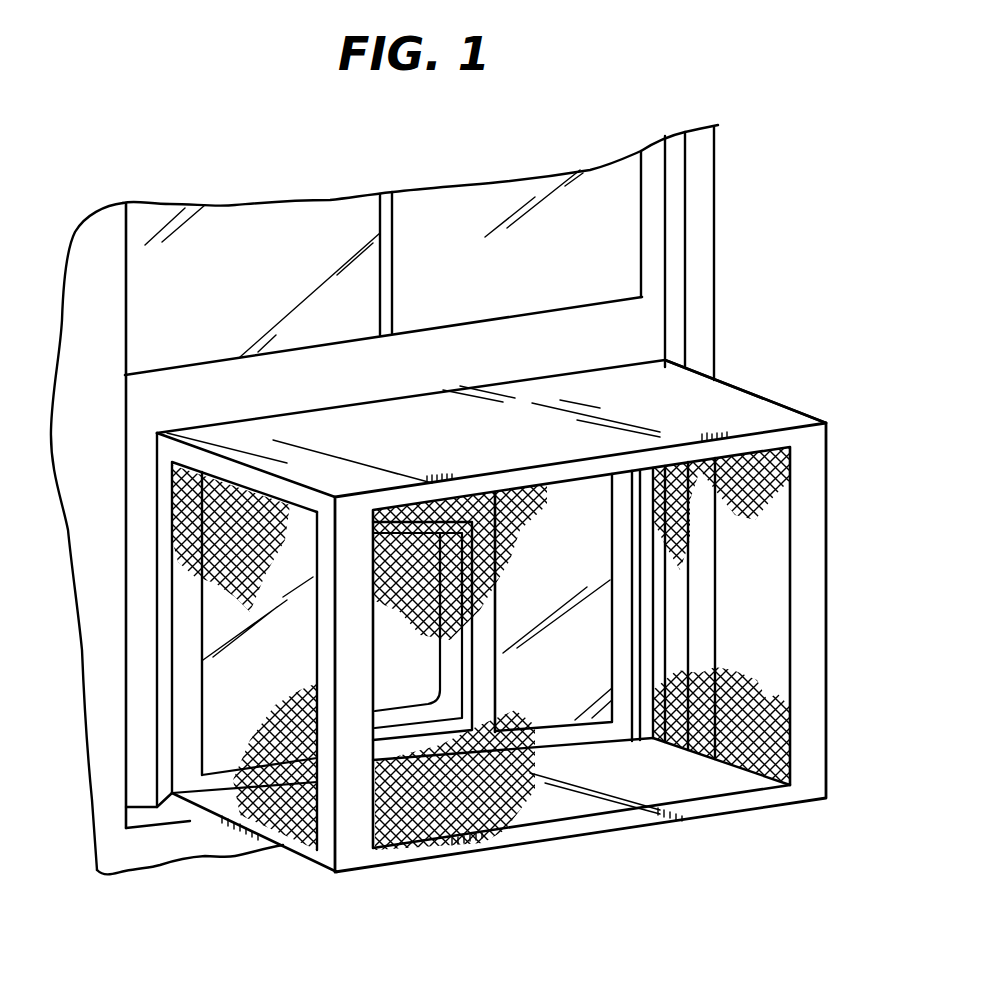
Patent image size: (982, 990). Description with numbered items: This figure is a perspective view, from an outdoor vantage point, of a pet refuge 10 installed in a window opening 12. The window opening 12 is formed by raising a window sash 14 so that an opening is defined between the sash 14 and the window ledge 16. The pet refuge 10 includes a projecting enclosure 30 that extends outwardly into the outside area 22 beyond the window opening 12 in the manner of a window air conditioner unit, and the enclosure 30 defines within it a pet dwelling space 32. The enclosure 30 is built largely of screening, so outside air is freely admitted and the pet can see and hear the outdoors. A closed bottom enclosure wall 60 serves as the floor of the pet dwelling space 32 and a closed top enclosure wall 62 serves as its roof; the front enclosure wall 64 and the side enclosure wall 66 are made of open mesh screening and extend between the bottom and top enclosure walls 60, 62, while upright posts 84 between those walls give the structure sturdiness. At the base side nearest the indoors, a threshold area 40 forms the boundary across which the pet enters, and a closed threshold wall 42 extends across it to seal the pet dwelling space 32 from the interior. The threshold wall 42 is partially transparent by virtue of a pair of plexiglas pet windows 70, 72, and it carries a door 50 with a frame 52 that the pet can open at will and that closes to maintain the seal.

The pet refuge 10 is at (791, 368).
The window opening 12 is at (132, 446).
The window sash 14 is at (213, 378).
The window ledge 16 is at (140, 822).
The outside area 22 is at (846, 395).
The projecting enclosure 30 is at (683, 393).
The pet dwelling space 32 is at (688, 775).
The threshold area 40 is at (458, 522).
The closed threshold wall 42 is at (227, 485).
The door 50 is at (415, 673).
The frame 52 is at (473, 640).
The bottom enclosure wall 60 is at (538, 847).
The top enclosure wall 62 is at (533, 430).
The front enclosure wall 64 is at (787, 488).
The side enclosure wall 66 is at (285, 843).
The pet window 70 is at (210, 637).
The pet window 72 is at (560, 682).
The upright post 84 is at (666, 466).